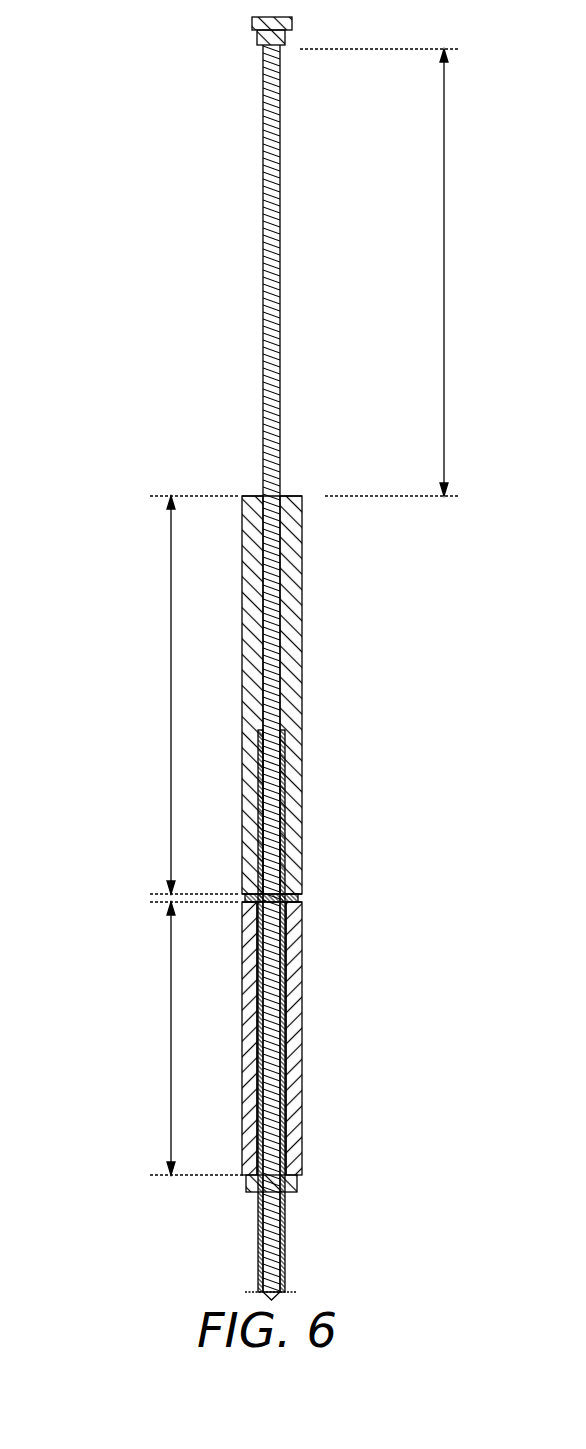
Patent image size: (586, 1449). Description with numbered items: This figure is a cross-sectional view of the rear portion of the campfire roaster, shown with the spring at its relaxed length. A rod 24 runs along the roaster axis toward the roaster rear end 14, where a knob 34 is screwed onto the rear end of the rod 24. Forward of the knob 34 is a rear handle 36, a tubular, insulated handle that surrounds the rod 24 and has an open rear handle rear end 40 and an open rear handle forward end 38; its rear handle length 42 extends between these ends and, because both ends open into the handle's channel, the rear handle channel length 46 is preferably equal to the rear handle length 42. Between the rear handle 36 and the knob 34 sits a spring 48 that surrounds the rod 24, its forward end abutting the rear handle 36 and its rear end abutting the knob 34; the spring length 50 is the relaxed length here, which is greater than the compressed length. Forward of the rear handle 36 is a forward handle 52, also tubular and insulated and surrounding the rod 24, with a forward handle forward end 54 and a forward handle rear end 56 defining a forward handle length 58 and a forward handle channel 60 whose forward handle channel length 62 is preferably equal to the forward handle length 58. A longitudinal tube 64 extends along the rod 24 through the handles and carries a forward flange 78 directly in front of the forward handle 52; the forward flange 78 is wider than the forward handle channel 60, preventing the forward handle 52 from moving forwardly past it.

The roaster rear end 14 is at (204, 40).
The knob 34 is at (252, 22).
The rod 24 is at (280, 118).
The spring 48 is at (280, 290).
The spring length 50 is at (444, 308).
The rear handle rear end 40 is at (302, 496).
The rear handle 36 is at (302, 612).
The rear handle forward end 38 is at (300, 893).
The forward handle rear end 56 is at (300, 903).
The rear handle length 42 is at (141, 695).
The rear handle channel length 46 is at (171, 620).
The forward handle length 58 is at (146, 1038).
The forward handle channel length 62 is at (171, 1050).
The forward handle 52 is at (302, 1018).
The forward handle channel 60 is at (290, 1085).
The longitudinal tube 64 is at (280, 768).
The forward flange 78 is at (254, 1213).
The forward handle forward end 54 is at (300, 1175).